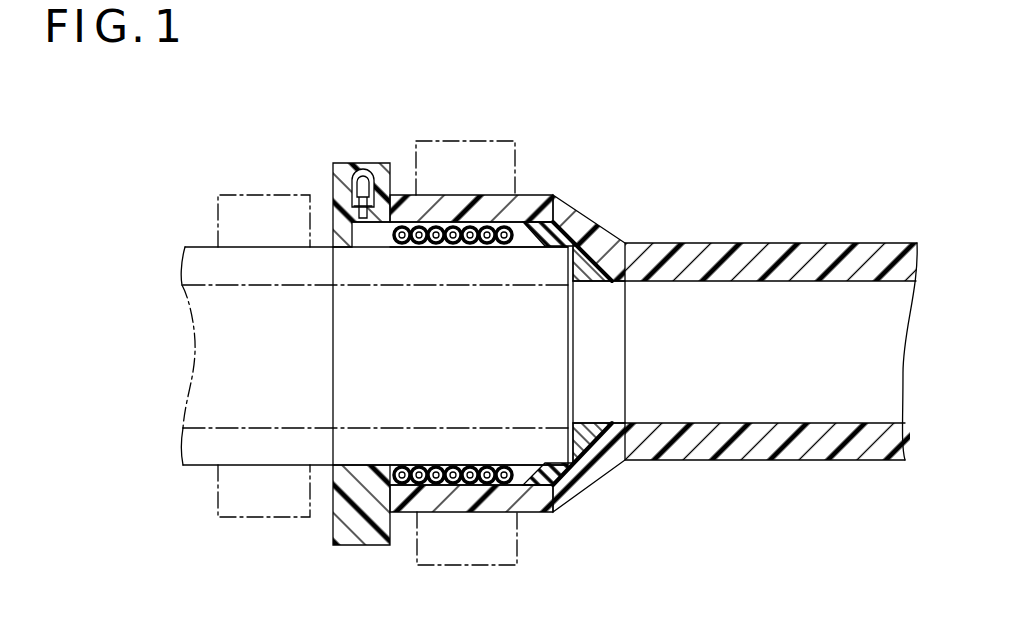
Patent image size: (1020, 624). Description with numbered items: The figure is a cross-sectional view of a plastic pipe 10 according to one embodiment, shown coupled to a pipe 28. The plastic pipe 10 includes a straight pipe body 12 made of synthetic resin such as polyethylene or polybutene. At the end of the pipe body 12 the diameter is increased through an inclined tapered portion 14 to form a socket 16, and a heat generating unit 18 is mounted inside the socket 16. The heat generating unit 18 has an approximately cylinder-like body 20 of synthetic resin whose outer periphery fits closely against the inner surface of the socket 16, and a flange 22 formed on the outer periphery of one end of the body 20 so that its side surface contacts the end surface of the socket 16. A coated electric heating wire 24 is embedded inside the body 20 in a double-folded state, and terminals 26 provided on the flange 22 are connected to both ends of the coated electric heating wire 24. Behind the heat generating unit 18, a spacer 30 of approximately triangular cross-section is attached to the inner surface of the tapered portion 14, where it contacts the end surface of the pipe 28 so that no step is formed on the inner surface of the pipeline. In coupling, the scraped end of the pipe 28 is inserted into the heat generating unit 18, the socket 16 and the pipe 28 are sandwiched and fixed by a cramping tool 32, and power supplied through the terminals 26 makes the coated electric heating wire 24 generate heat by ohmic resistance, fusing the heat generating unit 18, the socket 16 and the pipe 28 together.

The plastic pipe 10 is at (339, 47).
The pipe body 12 is at (785, 220).
The tapered portion 14 is at (593, 225).
The socket 16 is at (521, 195).
The heat generating unit 18 is at (325, 211).
The body 20 is at (525, 243).
The flange 22 is at (390, 168).
The coated electric heating wire 24 is at (462, 243).
The terminals 26 is at (362, 172).
The pipe to be coupled 28 is at (198, 455).
The spacer 30 is at (597, 281).
The cramping tool 32 is at (223, 195).